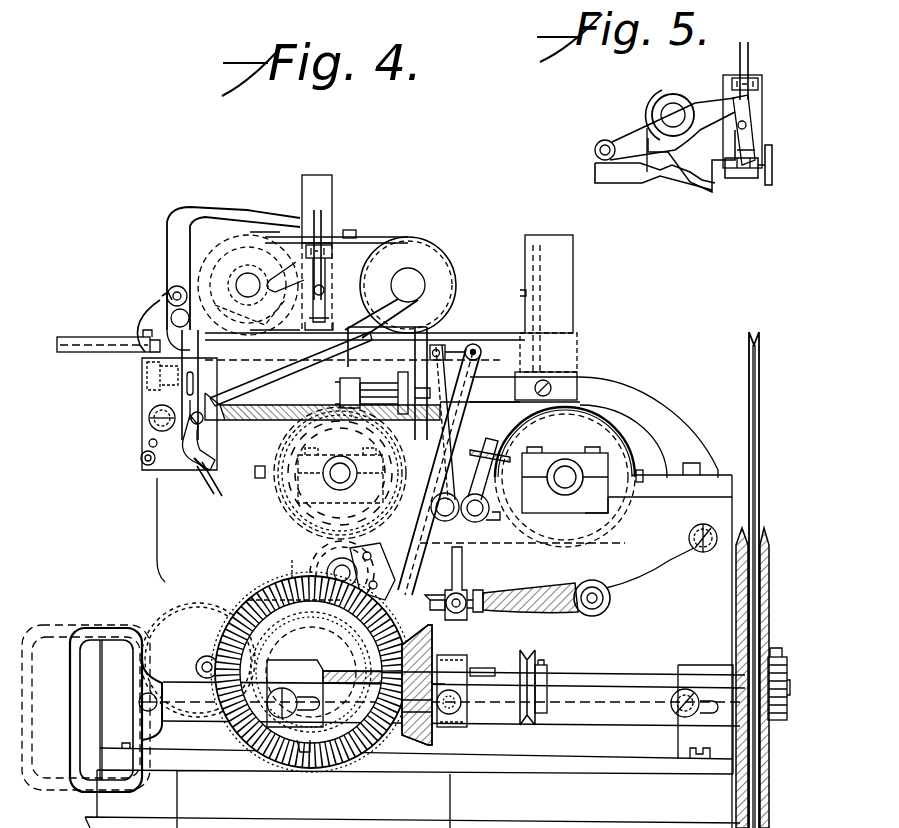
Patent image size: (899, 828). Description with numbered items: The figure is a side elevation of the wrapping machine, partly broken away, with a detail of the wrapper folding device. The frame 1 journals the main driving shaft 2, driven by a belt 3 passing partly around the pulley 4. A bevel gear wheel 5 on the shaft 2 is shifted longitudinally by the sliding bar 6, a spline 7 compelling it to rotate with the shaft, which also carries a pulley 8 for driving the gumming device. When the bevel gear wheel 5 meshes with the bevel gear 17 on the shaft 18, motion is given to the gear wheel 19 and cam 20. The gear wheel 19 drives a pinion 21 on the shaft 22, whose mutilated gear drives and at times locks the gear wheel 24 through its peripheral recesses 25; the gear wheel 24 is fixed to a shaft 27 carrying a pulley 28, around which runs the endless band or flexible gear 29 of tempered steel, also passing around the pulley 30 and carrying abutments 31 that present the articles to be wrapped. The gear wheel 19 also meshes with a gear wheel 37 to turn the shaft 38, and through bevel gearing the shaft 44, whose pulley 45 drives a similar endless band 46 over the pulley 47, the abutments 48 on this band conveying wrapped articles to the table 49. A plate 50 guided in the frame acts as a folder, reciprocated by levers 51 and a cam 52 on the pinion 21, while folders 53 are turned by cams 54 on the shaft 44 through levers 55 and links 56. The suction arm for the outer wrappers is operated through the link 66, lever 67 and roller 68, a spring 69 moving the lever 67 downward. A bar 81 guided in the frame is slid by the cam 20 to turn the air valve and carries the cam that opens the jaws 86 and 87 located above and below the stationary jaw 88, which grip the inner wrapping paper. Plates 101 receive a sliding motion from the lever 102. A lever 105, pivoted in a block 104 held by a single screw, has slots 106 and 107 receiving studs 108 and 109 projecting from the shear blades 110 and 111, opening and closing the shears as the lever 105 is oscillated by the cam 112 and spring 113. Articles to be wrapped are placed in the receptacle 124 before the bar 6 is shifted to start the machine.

In FIG. 4, the frame 1 is at (110, 627).
In FIG. 5, the frame 1 is at (640, 172).
In FIG. 4, the main driving shaft 2 is at (608, 676).
In FIG. 4, the belt 3 is at (763, 580).
In FIG. 4, the pulley 4 is at (768, 562).
In FIG. 4, the bevel gear wheel 5 is at (420, 733).
In FIG. 4, the sliding bar 6 is at (606, 712).
In FIG. 4, the spline 7 is at (472, 672).
In FIG. 4, the pulley 8 is at (532, 665).
In FIG. 4, the bevel gear 17 is at (366, 738).
In FIG. 4, the shaft 18 is at (318, 696).
In FIG. 4, the gear wheel 19 is at (352, 645).
In FIG. 4, the cam 20 is at (338, 773).
In FIG. 4, the pinion 21 is at (292, 574).
In FIG. 4, the shaft 22 is at (340, 575).
In FIG. 4, the gear wheel 24 is at (300, 528).
In FIG. 4, the peripheral recesses 25 is at (373, 478).
In FIG. 4, the shaft 27 is at (337, 477).
In FIG. 4, the pulley 28 is at (281, 488).
In FIG. 4, the endless band or flexible gear 29 is at (480, 548).
In FIG. 4, the pulley 30 is at (565, 477).
In FIG. 4, the abutments 31 is at (642, 478).
In FIG. 4, the gear wheel 37 is at (210, 624).
In FIG. 4, the shaft 38 is at (204, 664).
In FIG. 4, the shaft 44 is at (242, 284).
In FIG. 5, the shaft 44 is at (673, 113).
In FIG. 4, the pulley 45 is at (258, 370).
In FIG. 4, the endless band or flexible gear 46 is at (372, 238).
In FIG. 4, the pulley 47 is at (440, 280).
In FIG. 4, the abutments 48 is at (352, 231).
In FIG. 4, the table 49 is at (57, 348).
In FIG. 4, the plate 50 is at (440, 346).
In FIG. 4, the levers 51 is at (476, 348).
In FIG. 4, the cam 52 is at (388, 596).
In FIG. 5, the folders 53 is at (752, 178).
In FIG. 5, the cams 54 is at (648, 124).
In FIG. 4, the levers 55 is at (300, 236).
In FIG. 5, the levers 55 is at (692, 140).
In FIG. 4, the links 56 is at (322, 310).
In FIG. 5, the links 56 is at (750, 150).
In FIG. 4, the link 66 is at (452, 568).
In FIG. 4, the lever 67 is at (522, 600).
In FIG. 4, the roller 68 is at (250, 618).
In FIG. 4, the spring 69 is at (540, 604).
In FIG. 4, the bar 81 is at (442, 345).
In FIG. 4, the jaw 86 is at (360, 400).
In FIG. 4, the jaw 87 is at (340, 473).
In FIG. 4, the stationary jaw 88 is at (340, 392).
In FIG. 4, the plates 101 is at (312, 185).
In FIG. 4, the lever 102 is at (222, 212).
In FIG. 4, the block 104 is at (157, 478).
In FIG. 4, the lever 105 is at (183, 362).
In FIG. 4, the slot 106 is at (183, 390).
In FIG. 4, the slot 107 is at (212, 492).
In FIG. 4, the stud 108 is at (200, 382).
In FIG. 4, the stud 109 is at (180, 470).
In FIG. 4, the blade 110 is at (305, 362).
In FIG. 4, the blade 111 is at (322, 419).
In FIG. 4, the cam 112 is at (213, 262).
In FIG. 4, the spring 113 is at (155, 322).
In FIG. 4, the receptacle 124 is at (546, 317).